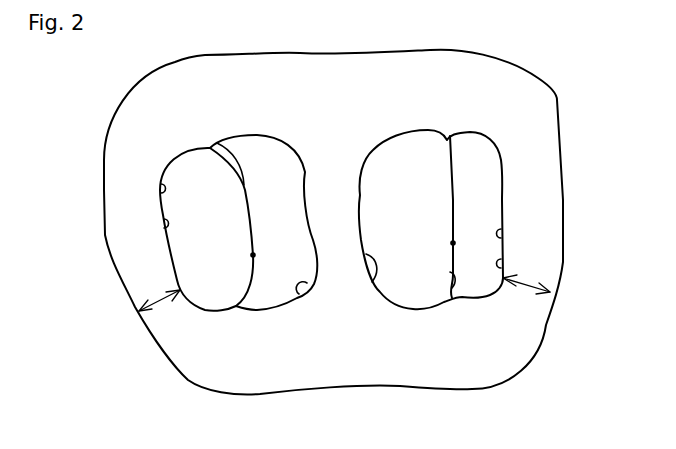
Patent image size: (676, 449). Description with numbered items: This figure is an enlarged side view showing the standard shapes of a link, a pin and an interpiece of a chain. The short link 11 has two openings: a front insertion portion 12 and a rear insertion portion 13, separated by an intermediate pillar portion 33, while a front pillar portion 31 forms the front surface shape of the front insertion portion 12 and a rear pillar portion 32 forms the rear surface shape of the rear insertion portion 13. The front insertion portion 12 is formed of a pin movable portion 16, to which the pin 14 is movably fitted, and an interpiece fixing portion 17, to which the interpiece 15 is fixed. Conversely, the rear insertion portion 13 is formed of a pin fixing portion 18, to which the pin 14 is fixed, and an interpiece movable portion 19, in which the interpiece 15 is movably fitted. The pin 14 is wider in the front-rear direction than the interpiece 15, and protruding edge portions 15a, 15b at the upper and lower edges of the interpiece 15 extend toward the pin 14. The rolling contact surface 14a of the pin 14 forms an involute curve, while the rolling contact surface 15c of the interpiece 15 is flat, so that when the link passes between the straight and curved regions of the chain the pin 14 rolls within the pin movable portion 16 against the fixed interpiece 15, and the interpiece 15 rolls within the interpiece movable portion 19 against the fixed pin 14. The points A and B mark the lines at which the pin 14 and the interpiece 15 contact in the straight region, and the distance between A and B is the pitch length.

The short link 11 is at (612, 122).
The front insertion portion 12 is at (500, 238).
The rear insertion portion 13 is at (162, 222).
The pin 14 is at (180, 243).
The rolling contact surface 14a is at (217, 146).
The interpiece 15 is at (493, 195).
The protruding edge portion 15a is at (453, 140).
The protruding edge portion 15b is at (453, 298).
The rolling contact surface 15c is at (452, 298).
The pin movable portion 16 is at (374, 292).
The interpiece fixing portion 17 is at (504, 260).
The pin fixing portion 18 is at (158, 189).
The interpiece movable portion 19 is at (303, 296).
The front pillar portion 31 is at (545, 162).
The rear pillar portion 32 is at (137, 282).
The intermediate pillar portion 33 is at (333, 193).
The contact line A is at (254, 255).
The contact line B is at (452, 243).